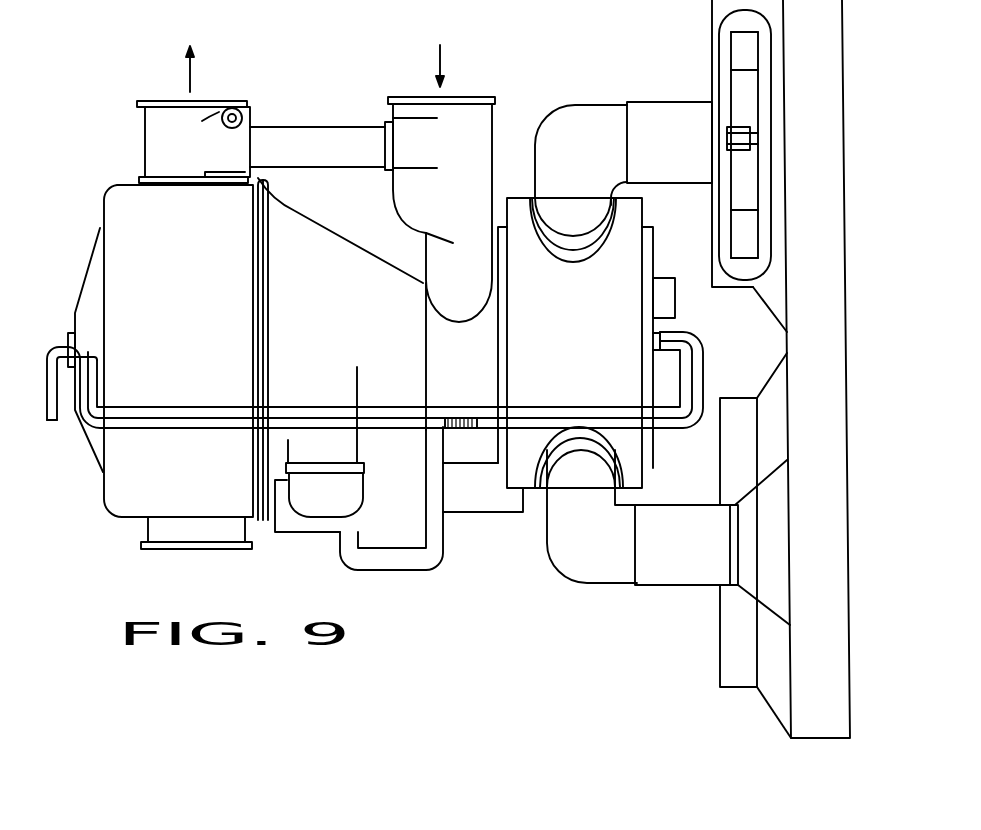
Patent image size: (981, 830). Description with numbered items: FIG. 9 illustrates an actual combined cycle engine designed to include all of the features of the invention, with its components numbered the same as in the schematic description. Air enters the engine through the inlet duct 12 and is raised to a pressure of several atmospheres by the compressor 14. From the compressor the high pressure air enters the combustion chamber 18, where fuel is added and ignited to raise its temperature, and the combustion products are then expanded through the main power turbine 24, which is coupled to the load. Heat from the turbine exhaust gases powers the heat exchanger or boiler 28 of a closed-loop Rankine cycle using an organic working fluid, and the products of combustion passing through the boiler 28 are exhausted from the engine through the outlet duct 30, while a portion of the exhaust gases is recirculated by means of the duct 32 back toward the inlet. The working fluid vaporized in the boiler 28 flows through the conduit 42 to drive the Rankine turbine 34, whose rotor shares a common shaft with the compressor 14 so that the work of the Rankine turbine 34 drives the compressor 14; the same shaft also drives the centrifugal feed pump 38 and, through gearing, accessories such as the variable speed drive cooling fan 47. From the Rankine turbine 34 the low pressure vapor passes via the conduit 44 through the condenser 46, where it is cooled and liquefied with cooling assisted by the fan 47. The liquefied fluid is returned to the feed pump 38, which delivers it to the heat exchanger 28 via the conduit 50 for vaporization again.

The inlet duct 12 is at (493, 127).
The compressor 14 is at (483, 437).
The combustion chamber 18 is at (360, 448).
The main power turbine 24 is at (327, 234).
The heat exchanger (boiler) 28 is at (100, 210).
The outlet duct 30 is at (140, 130).
The duct 32 is at (313, 128).
The Rankine turbine 34 is at (643, 250).
The centrifugal feed pump 38 is at (657, 322).
The conduit 42 is at (55, 403).
The conduit 44 is at (587, 584).
The condenser 46 is at (835, 212).
The variable speed drive cooling fan 47 is at (737, 77).
The conduit 50 is at (181, 416).